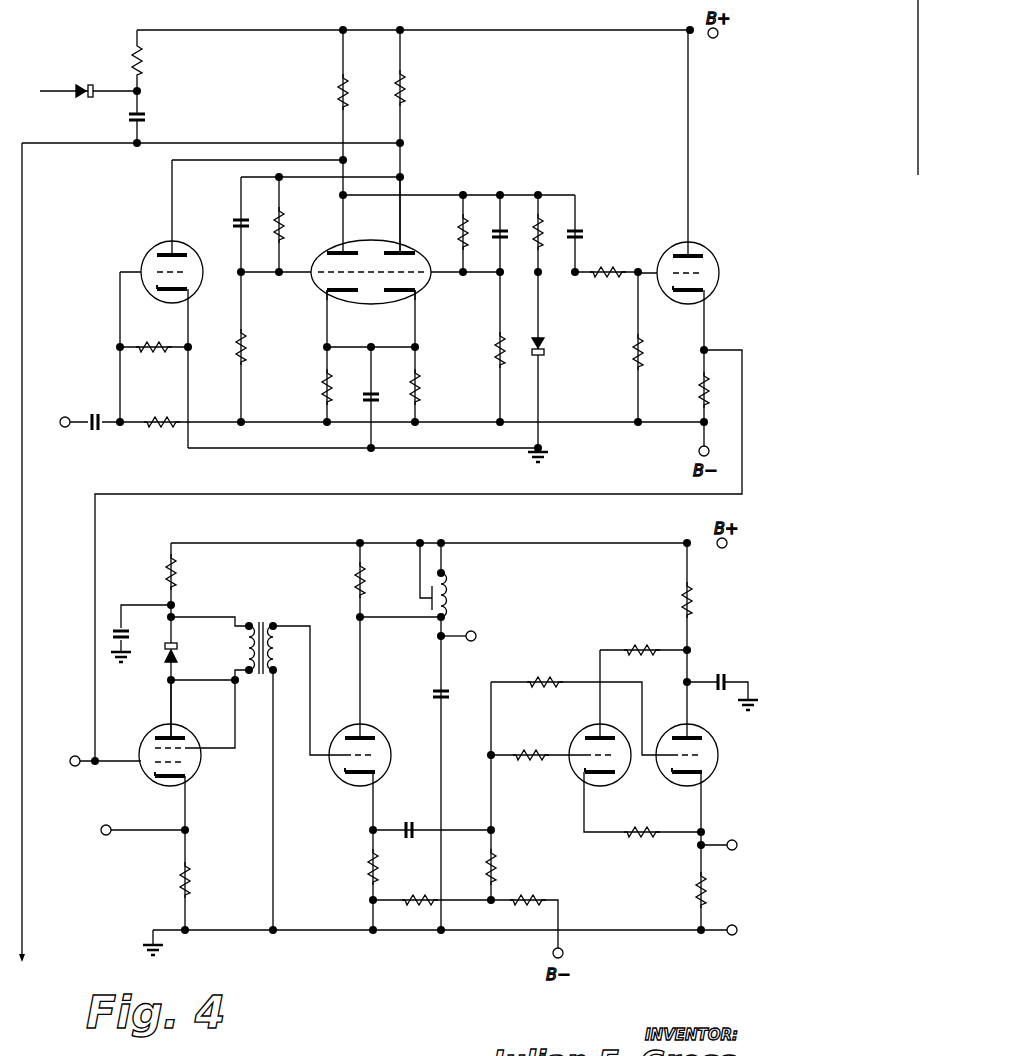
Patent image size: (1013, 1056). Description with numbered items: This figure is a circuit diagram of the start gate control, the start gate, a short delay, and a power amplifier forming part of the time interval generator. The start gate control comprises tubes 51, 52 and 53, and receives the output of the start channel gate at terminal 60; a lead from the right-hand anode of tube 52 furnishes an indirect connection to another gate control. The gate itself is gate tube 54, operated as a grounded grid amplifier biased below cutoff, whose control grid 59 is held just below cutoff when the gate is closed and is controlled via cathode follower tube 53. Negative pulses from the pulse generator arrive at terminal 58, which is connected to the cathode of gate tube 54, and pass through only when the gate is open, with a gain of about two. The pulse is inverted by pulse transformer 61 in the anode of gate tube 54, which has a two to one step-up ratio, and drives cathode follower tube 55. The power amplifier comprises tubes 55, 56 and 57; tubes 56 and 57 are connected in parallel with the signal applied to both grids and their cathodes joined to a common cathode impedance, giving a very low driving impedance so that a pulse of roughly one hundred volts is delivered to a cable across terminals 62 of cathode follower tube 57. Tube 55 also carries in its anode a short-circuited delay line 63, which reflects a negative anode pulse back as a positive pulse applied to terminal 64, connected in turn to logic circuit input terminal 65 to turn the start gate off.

The tube 51 is at (160, 232).
The tube 52 is at (408, 238).
The cathode follower tube 53 is at (704, 240).
The gate tube 54 is at (158, 718).
The cathode follower tube 55 is at (370, 720).
The tube 56 is at (598, 718).
The cathode follower tube 57 is at (718, 742).
The terminal 58 is at (106, 836).
The control grid 59 is at (151, 765).
The terminal 60 is at (70, 90).
The pulse transformer 61 is at (264, 622).
The terminals 62 is at (733, 851).
The delay line 63 is at (456, 598).
The terminal 64 is at (476, 634).
The logic circuit input terminal 65 is at (66, 416).